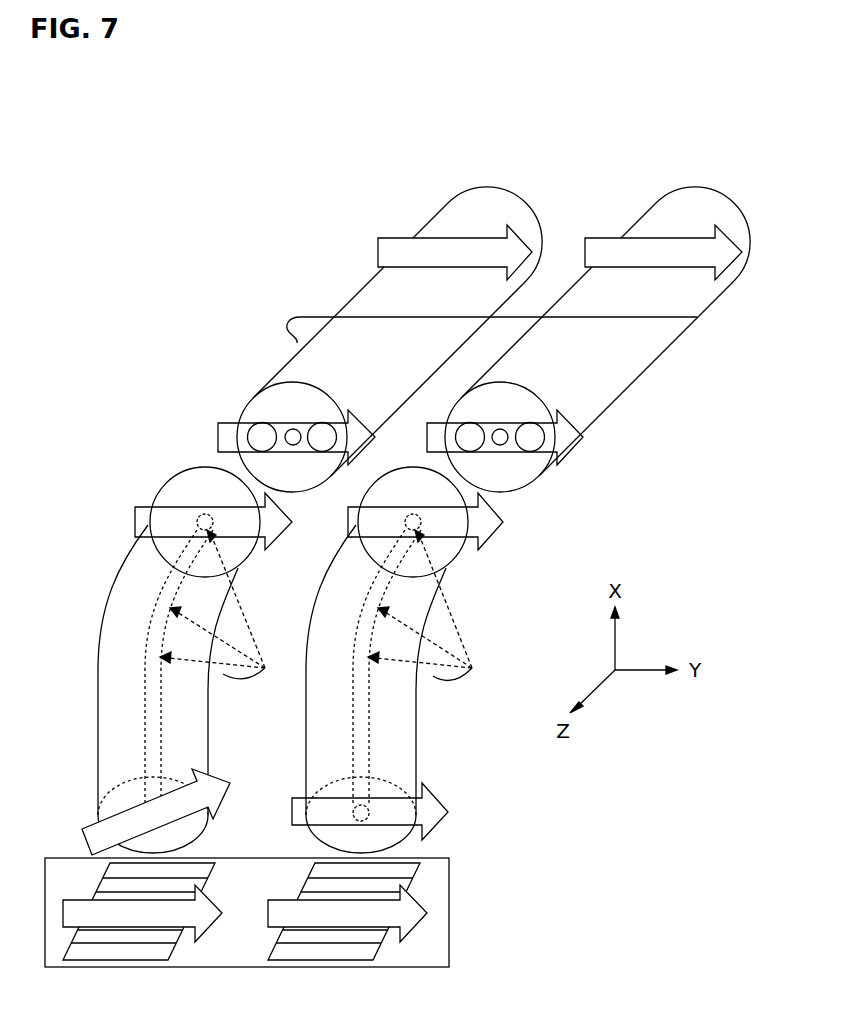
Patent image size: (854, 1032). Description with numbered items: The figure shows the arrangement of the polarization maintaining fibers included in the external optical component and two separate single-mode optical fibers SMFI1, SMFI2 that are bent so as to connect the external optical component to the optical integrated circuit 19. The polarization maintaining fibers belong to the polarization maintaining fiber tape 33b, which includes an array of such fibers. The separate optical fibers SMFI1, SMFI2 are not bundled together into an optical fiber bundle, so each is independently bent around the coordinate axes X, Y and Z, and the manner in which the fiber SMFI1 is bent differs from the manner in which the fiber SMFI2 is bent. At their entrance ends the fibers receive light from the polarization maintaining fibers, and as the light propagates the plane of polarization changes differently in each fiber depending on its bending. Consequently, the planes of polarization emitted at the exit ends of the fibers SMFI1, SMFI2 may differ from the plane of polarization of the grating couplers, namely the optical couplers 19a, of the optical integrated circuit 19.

The polarization maintaining fiber tape 33b is at (697, 318).
The optical integrated circuit 19 is at (449, 930).
The optical couplers 19a is at (210, 868).
The separate single-mode optical fiber SMFI1 is at (208, 700).
The separate single-mode optical fiber SMFI2 is at (417, 700).